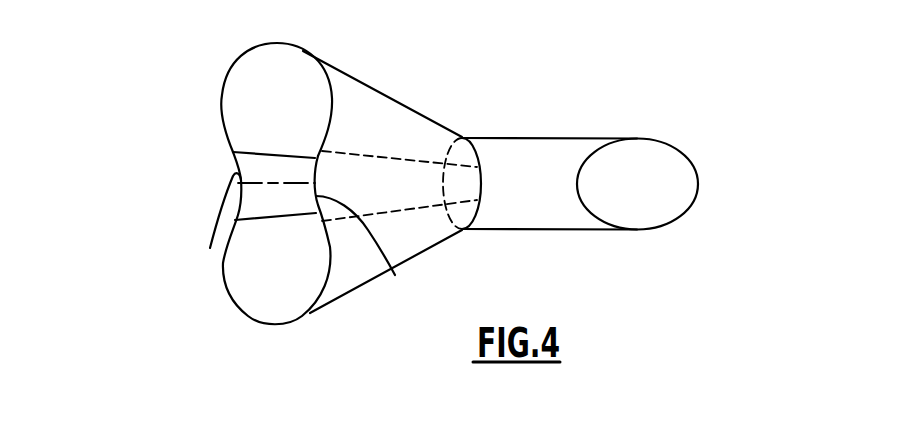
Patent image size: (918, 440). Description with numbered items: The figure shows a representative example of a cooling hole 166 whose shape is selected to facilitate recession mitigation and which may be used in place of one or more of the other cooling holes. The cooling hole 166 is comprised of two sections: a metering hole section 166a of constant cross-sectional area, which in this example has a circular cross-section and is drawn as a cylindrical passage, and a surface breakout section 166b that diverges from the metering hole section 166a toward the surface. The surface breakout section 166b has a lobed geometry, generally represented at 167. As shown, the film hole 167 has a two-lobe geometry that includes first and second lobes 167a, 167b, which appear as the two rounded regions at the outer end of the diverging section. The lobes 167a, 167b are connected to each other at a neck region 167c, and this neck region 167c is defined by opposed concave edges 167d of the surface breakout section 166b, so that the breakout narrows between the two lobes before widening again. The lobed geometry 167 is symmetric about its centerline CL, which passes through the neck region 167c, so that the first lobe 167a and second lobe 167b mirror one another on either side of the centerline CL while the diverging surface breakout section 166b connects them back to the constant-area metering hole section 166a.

The cooling hole 166 is at (486, 202).
The metering hole section 166a is at (473, 128).
The surface breakout section 166b is at (275, 22).
The lobed geometry 167 is at (278, 204).
The first lobe 167a is at (232, 292).
The second lobe 167b is at (232, 74).
The neck region 167c is at (205, 145).
The concave edges 167d is at (210, 248).
The centerline CL is at (262, 183).